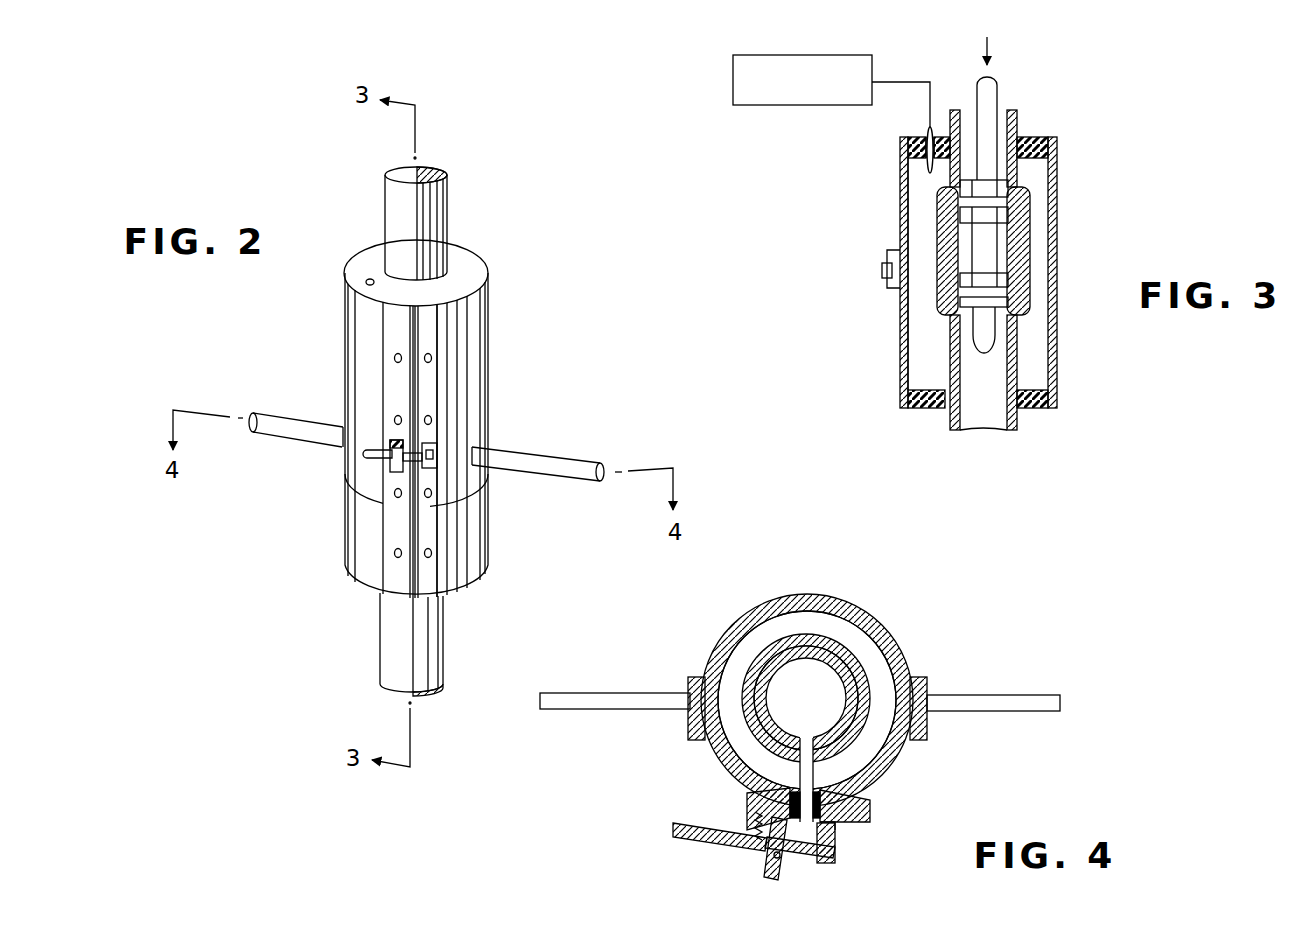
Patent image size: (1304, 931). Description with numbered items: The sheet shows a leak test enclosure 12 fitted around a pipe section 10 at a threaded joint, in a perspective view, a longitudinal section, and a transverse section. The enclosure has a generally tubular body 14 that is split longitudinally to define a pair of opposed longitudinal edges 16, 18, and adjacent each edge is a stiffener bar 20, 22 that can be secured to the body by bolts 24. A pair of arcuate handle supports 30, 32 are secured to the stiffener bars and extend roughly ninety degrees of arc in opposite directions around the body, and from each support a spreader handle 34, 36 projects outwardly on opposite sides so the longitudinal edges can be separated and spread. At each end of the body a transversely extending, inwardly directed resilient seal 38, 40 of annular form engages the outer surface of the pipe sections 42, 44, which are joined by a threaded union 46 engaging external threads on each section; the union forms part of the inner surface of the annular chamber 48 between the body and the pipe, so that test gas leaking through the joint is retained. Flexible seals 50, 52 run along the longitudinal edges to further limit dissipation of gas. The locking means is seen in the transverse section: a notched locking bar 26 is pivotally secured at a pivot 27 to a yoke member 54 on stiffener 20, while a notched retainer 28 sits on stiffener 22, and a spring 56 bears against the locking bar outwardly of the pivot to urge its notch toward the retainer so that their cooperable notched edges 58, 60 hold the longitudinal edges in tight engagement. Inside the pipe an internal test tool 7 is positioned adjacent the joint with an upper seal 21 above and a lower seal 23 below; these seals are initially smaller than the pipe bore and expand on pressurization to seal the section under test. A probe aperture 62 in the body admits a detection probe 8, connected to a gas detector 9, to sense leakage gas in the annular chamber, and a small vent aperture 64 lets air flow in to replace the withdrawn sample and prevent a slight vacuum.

In FIG. 3, the internal test tool 7 is at (990, 242).
In FIG. 3, the detection probe 8 is at (930, 163).
In FIG. 3, the gas detector 9 is at (817, 103).
In FIG. 2, the pipe section 10 is at (492, 214).
In FIG. 3, the pipe section 10 is at (1036, 97).
In FIG. 2, the leak test enclosure 12 is at (509, 306).
In FIG. 3, the leak test enclosure 12 is at (1070, 177).
In FIG. 4, the leak test enclosure 12 is at (889, 610).
In FIG. 2, the tubular body 14 is at (483, 357).
In FIG. 3, the tubular body 14 is at (1057, 257).
In FIG. 4, the tubular body 14 is at (898, 650).
In FIG. 2, the longitudinal edge 16 is at (410, 343).
In FIG. 4, the longitudinal edge 16 is at (790, 790).
In FIG. 2, the longitudinal edge 18 is at (445, 393).
In FIG. 4, the longitudinal edge 18 is at (828, 787).
In FIG. 2, the stiffener bar 20 is at (393, 318).
In FIG. 4, the stiffener bar 20 is at (747, 802).
In FIG. 3, the upper seal 21 is at (965, 215).
In FIG. 2, the stiffener bar 22 is at (437, 348).
In FIG. 4, the stiffener bar 22 is at (857, 803).
In FIG. 3, the lower seal 23 is at (960, 303).
In FIG. 2, the bolts 24 is at (395, 557).
In FIG. 2, the locking bar 26 is at (363, 457).
In FIG. 3, the locking bar 26 is at (882, 270).
In FIG. 4, the locking bar 26 is at (687, 840).
In FIG. 4, the pivot 27 is at (770, 857).
In FIG. 2, the notched retainer 28 is at (430, 445).
In FIG. 3, the notched retainer 28 is at (890, 288).
In FIG. 4, the notched retainer 28 is at (837, 825).
In FIG. 2, the arcuate handle support 30 is at (353, 418).
In FIG. 4, the arcuate handle support 30 is at (693, 740).
In FIG. 2, the arcuate handle support 32 is at (477, 487).
In FIG. 4, the arcuate handle support 32 is at (924, 730).
In FIG. 2, the spreader handle 34 is at (283, 435).
In FIG. 4, the spreader handle 34 is at (567, 708).
In FIG. 2, the spreader handle 36 is at (567, 477).
In FIG. 4, the spreader handle 36 is at (1013, 693).
In FIG. 2, the resilient seal 38 is at (465, 263).
In FIG. 3, the resilient seal 38 is at (1040, 137).
In FIG. 3, the resilient seal 40 is at (1030, 408).
In FIG. 2, the pipe section 42 is at (392, 207).
In FIG. 3, the pipe section 42 is at (1000, 120).
In FIG. 2, the pipe section 44 is at (440, 647).
In FIG. 3, the pipe section 44 is at (947, 423).
In FIG. 4, the pipe section 44 is at (778, 663).
In FIG. 3, the union 46 is at (1030, 283).
In FIG. 4, the union 46 is at (823, 645).
In FIG. 3, the annular chamber 48 is at (918, 190).
In FIG. 4, the annular chamber 48 is at (728, 660).
In FIG. 2, the flexible seal 50 is at (410, 333).
In FIG. 4, the flexible seal 50 is at (800, 790).
In FIG. 2, the flexible seal 52 is at (420, 537).
In FIG. 4, the flexible seal 52 is at (813, 790).
In FIG. 2, the yoke member 54 is at (392, 437).
In FIG. 4, the yoke member 54 is at (770, 878).
In FIG. 4, the spring 56 is at (756, 825).
In FIG. 4, the notched edge 58 is at (837, 837).
In FIG. 4, the notched edge 60 is at (817, 853).
In FIG. 2, the probe aperture 62 is at (368, 280).
In FIG. 3, the probe aperture 62 is at (928, 138).
In FIG. 3, the vent aperture 64 is at (930, 408).